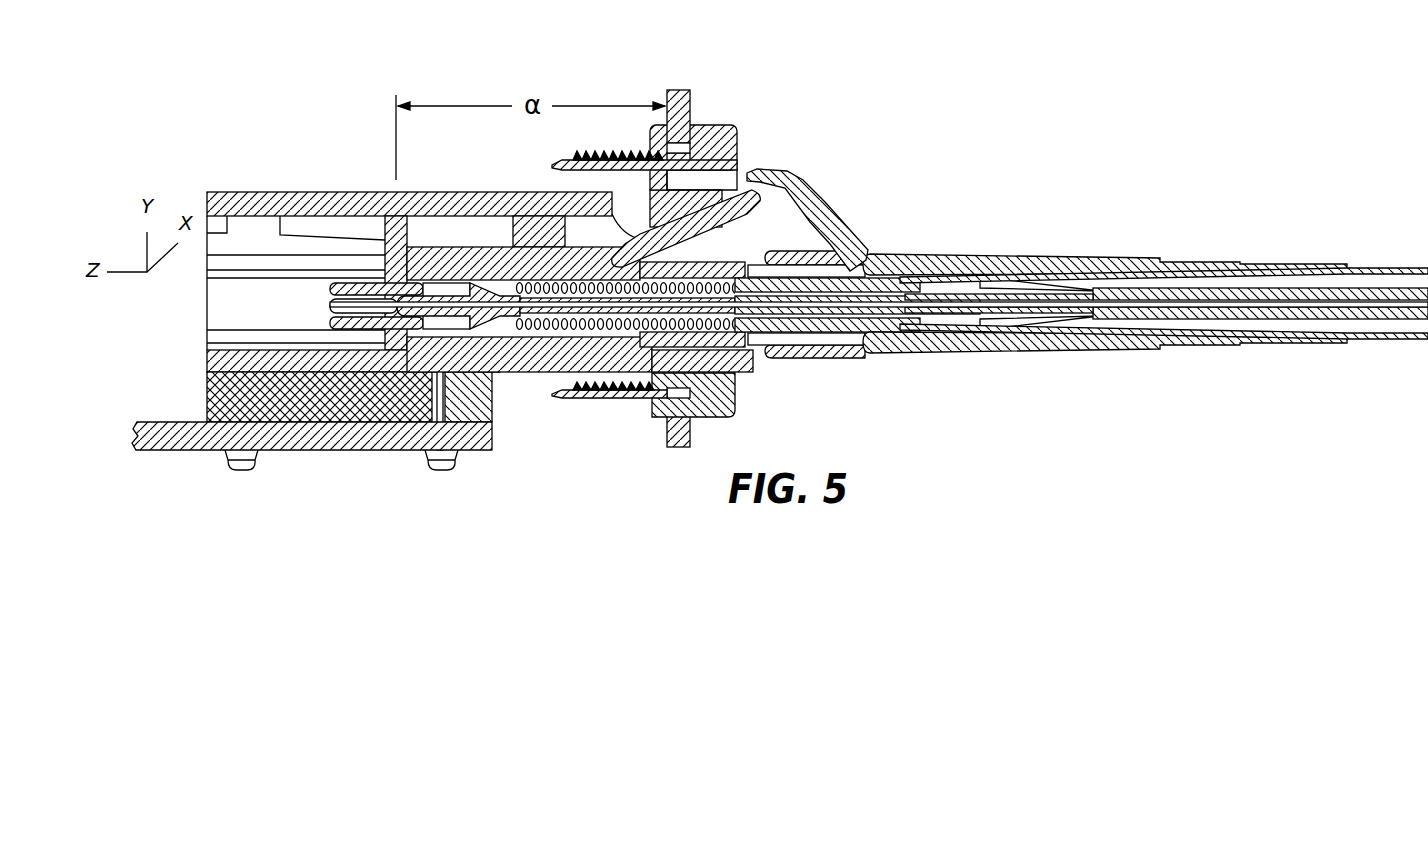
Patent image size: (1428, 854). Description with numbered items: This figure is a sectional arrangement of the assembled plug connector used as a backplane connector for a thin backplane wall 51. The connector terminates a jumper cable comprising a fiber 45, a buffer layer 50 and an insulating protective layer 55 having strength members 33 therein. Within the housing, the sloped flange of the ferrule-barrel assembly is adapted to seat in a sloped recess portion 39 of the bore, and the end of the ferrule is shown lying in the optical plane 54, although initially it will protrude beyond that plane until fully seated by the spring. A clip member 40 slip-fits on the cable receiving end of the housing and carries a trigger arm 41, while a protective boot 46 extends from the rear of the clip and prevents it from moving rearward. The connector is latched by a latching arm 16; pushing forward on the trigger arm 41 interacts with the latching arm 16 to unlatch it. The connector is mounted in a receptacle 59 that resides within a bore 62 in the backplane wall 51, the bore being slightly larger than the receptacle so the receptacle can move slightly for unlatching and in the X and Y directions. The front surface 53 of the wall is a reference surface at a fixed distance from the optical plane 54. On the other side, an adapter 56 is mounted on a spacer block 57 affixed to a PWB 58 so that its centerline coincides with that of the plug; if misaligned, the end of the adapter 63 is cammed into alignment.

The latching arm 16 is at (753, 204).
The strength members 33 is at (1055, 288).
The sloped recess portion 39 is at (470, 262).
The clip member 40 is at (803, 358).
The trigger arm 41 is at (808, 190).
The fiber 45 is at (540, 314).
The protective boot 46 is at (1200, 342).
The buffer layer 50 is at (960, 314).
The thin backplane wall 51 is at (682, 90).
The front surface 53 is at (666, 94).
The optical plane 54 is at (396, 178).
The insulating protective layer 55 is at (1208, 290).
The adapter 56 is at (266, 192).
The spacer block 57 is at (207, 400).
The PWB 58 is at (170, 452).
The receptacle 59 is at (740, 142).
The bore 62 is at (690, 392).
The end of the adapter 63 is at (648, 392).